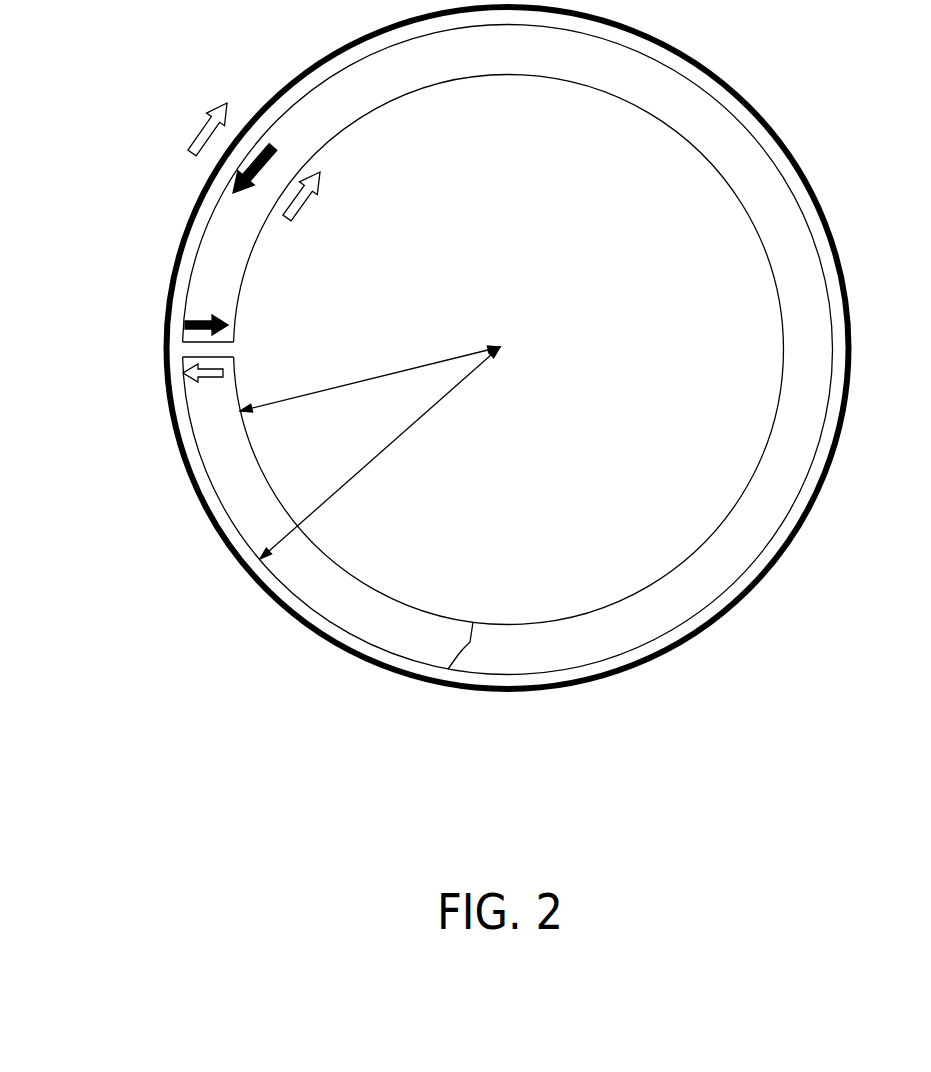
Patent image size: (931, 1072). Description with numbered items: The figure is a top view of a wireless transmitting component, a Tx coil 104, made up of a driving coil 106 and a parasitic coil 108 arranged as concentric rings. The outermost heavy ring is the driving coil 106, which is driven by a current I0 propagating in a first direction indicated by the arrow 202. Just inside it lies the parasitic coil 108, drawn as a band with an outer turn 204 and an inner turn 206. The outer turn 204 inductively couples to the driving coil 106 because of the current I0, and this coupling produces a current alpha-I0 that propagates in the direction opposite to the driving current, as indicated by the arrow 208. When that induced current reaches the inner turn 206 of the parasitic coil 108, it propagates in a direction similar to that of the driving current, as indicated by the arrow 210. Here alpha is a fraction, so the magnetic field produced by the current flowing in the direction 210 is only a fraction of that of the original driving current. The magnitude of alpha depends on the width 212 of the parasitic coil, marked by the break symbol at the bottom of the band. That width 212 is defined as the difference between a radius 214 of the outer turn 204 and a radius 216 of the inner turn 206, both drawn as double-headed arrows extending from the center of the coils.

The Tx coil 104 is at (521, 874).
The driving coil 106 is at (280, 601).
The parasitic coil 108 is at (705, 122).
The arrow 202 is at (200, 128).
The outer turn 204 is at (196, 247).
The inner turn 206 is at (238, 292).
The arrow 208 is at (258, 145).
The arrow 210 is at (318, 182).
The width of the parasitic coil 212 is at (485, 645).
The radius of the outer turn 214 is at (382, 448).
The radius of the inner turn 216 is at (385, 373).